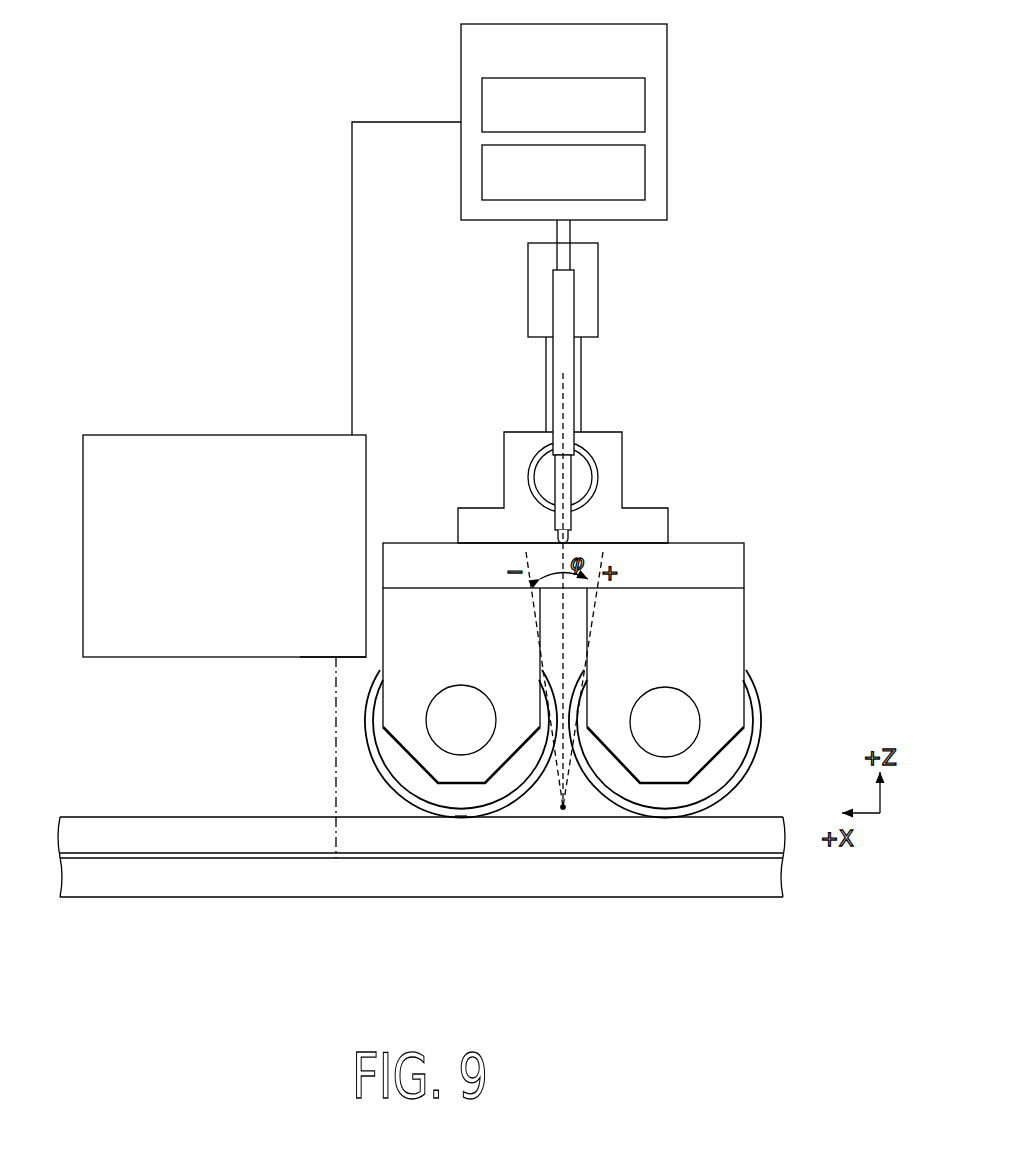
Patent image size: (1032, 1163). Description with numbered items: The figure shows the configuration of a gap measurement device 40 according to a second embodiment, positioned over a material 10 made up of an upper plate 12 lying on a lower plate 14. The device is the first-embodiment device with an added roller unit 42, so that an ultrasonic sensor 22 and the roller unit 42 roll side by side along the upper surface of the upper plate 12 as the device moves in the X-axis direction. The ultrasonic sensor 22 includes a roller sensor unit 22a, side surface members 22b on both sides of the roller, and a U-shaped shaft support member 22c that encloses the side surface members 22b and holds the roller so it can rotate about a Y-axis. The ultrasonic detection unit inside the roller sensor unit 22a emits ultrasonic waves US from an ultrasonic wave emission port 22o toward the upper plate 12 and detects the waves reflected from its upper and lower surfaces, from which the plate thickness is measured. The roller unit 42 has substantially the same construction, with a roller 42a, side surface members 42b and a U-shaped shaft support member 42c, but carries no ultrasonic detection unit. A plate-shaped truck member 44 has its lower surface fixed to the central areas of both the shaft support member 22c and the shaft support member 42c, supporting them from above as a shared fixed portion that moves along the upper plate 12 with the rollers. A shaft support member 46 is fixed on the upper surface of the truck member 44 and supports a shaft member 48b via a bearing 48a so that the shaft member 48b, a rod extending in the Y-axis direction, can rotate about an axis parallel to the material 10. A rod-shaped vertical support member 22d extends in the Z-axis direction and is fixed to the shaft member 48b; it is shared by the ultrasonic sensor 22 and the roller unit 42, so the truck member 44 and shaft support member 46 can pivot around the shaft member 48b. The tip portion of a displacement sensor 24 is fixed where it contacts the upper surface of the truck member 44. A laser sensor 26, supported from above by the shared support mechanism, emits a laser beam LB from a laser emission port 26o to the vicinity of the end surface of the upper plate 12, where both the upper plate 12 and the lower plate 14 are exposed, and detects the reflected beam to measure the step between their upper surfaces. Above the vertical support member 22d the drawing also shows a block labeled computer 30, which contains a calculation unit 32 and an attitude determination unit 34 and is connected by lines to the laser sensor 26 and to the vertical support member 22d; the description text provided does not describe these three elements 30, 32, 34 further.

The material 10 is at (421, 850).
The upper plate 12 is at (147, 832).
The lower plate 14 is at (177, 880).
The ultrasonic sensor 22 is at (464, 786).
The roller sensor unit 22a is at (395, 785).
The side surface members 22b is at (508, 777).
The shaft support member 22c is at (517, 730).
The vertical support member 22d is at (587, 290).
The ultrasonic wave emission port 22o is at (460, 818).
The displacement sensor 24 is at (560, 348).
The laser sensor 26 is at (230, 450).
The laser emission port 26o is at (335, 660).
The computer 30 is at (667, 27).
The calculation unit 32 is at (645, 104).
The attitude determination unit 34 is at (645, 170).
The gap measurement device 40 is at (208, 175).
The roller unit 42 is at (694, 786).
The roller 42a is at (708, 800).
The side surface members 42b is at (668, 795).
The shaft support member 42c is at (744, 622).
The truck member 44 is at (744, 565).
The shaft support member 46 is at (608, 432).
The bearing 48a is at (583, 449).
The shaft member 48b is at (583, 477).
The laser beam LB is at (336, 772).
The ultrasonic waves US is at (462, 833).